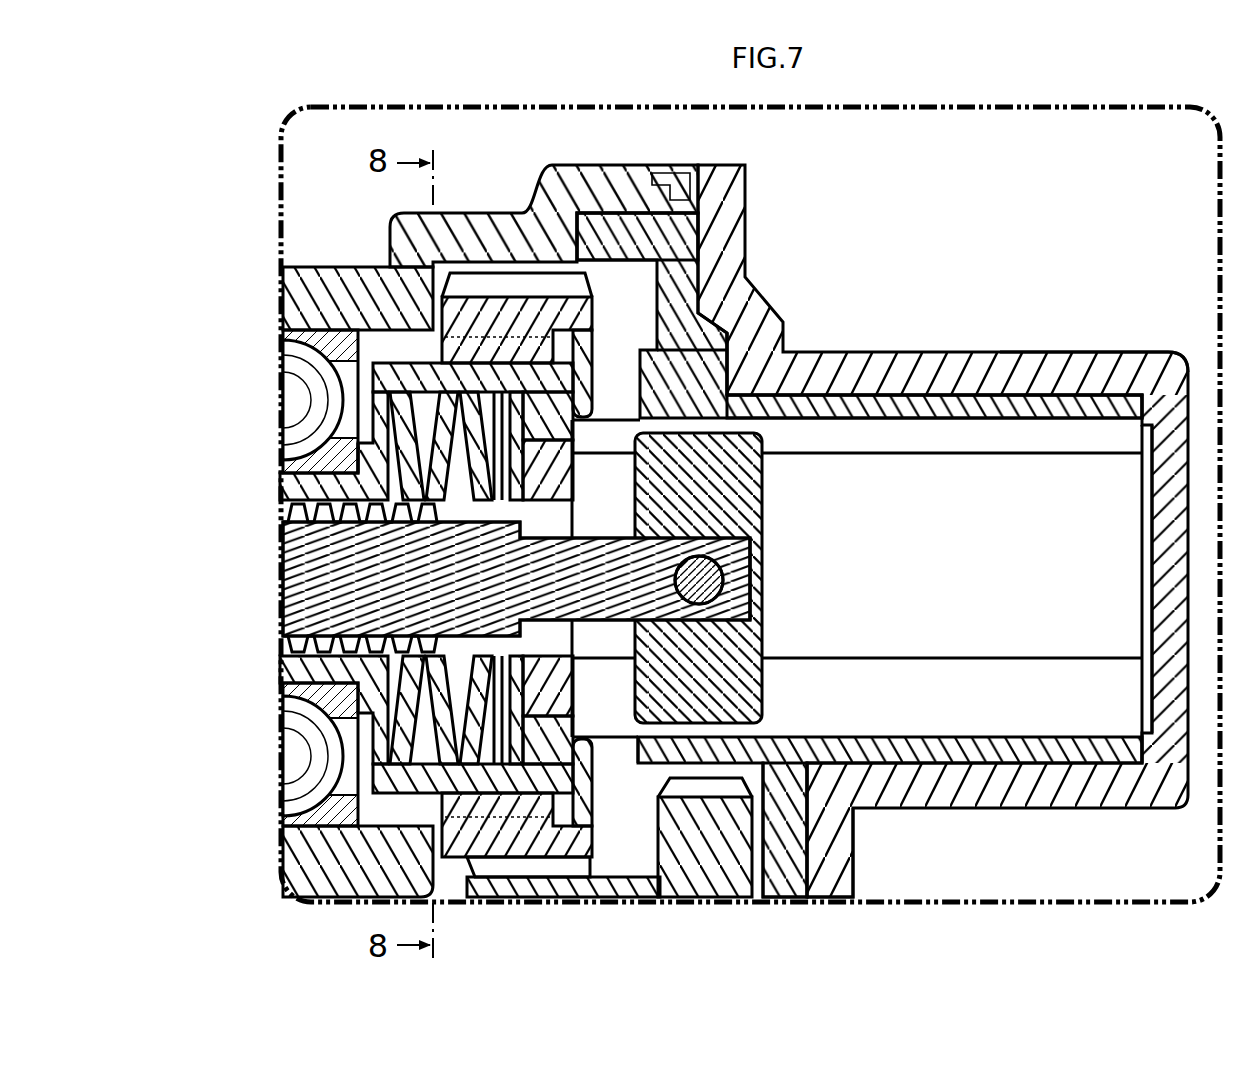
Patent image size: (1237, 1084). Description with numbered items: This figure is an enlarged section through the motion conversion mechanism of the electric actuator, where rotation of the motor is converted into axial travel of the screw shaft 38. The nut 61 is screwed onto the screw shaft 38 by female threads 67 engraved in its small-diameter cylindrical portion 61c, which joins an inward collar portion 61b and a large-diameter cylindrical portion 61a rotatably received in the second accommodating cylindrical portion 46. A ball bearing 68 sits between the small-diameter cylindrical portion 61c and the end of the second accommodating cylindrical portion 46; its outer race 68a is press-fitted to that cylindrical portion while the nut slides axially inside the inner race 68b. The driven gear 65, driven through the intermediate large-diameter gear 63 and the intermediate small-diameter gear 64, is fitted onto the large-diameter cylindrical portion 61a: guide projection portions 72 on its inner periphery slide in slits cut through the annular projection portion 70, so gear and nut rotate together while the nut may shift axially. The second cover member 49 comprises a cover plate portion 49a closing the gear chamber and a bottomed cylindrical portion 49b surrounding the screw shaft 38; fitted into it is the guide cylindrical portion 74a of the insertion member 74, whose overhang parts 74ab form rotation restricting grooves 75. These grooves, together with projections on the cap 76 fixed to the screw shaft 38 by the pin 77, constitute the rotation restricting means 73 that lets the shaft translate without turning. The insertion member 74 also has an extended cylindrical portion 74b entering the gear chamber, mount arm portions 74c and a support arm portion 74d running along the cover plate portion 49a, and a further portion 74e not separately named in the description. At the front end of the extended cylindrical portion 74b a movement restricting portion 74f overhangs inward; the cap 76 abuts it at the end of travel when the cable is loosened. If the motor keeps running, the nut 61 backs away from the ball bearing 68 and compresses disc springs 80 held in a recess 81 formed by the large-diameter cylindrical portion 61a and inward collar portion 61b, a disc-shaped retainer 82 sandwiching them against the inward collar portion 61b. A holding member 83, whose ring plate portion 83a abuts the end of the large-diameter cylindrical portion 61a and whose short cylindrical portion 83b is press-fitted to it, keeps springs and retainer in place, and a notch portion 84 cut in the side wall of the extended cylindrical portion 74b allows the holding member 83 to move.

The screw shaft 38 is at (745, 568).
The second accommodating cylindrical portion 46 is at (328, 330).
The second cover member 49 is at (755, 213).
The cover plate portion 49a is at (855, 855).
The bottomed cylindrical portion 49b is at (1082, 362).
The nut 61 is at (397, 798).
The large-diameter cylindrical portion 61a is at (415, 373).
The inward collar portion 61b is at (375, 417).
The small-diameter cylindrical portion 61c is at (292, 506).
The intermediate large-diameter gear 63 is at (737, 787).
The intermediate small-diameter gear 64 is at (610, 870).
The driven gear 65 is at (550, 288).
The female threads 67 is at (300, 548).
The ball bearing 68 is at (303, 373).
The outer race 68a is at (328, 278).
The inner race 68b is at (300, 455).
The annular projection portion 70 is at (492, 268).
The guide projection portions 72 is at (592, 392).
The rotation restricting means 73 is at (772, 652).
The insertion member 74 is at (712, 328).
The guide cylindrical portion 74a is at (950, 383).
The overhang parts 74ab is at (1007, 757).
The extended cylindrical portion 74b is at (707, 745).
The mount arm portions 74c is at (717, 362).
The support arm portion 74d is at (800, 840).
The holder flange 74e is at (628, 228).
The movement restricting portion 74f is at (578, 477).
The rotation restricting grooves 75 is at (1123, 763).
The cap 76 is at (737, 507).
The pin 77 is at (740, 585).
The disc springs 80 is at (445, 480).
The recess 81 is at (573, 642).
The retainer 82 is at (573, 705).
The holding member 83 is at (600, 330).
The ring plate portion 83a is at (600, 373).
The short cylindrical portion 83b is at (574, 428).
The notch portion 84 is at (642, 752).